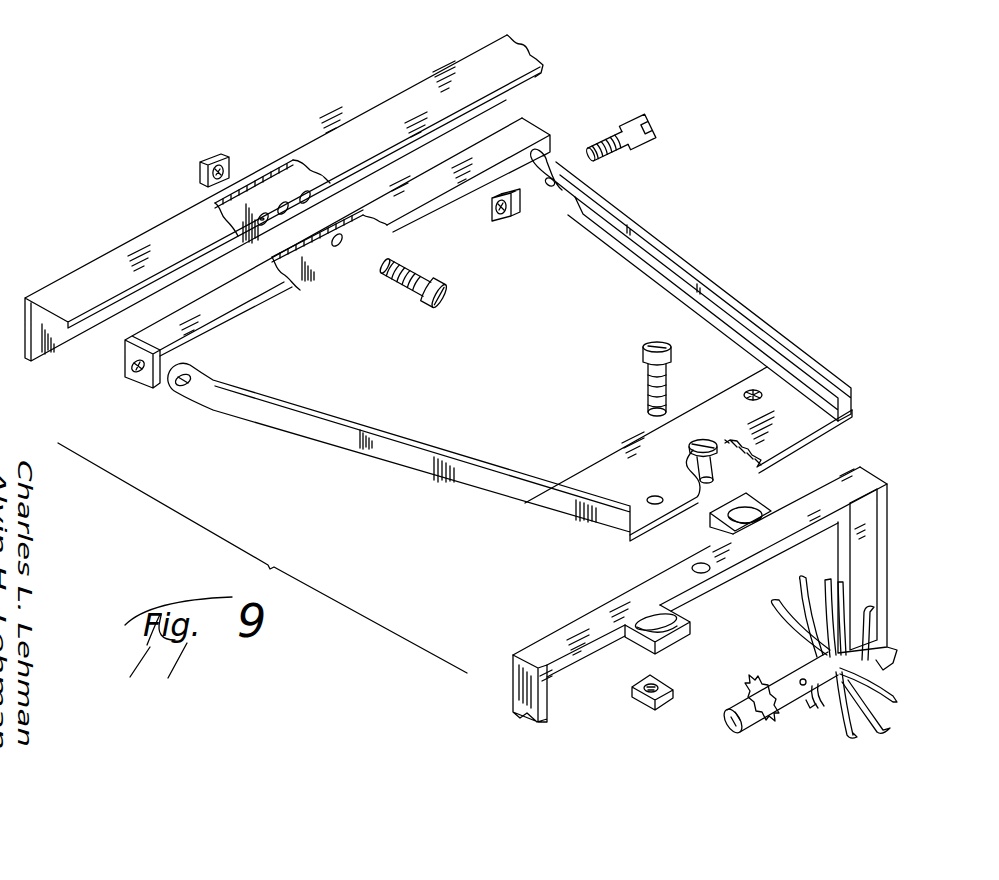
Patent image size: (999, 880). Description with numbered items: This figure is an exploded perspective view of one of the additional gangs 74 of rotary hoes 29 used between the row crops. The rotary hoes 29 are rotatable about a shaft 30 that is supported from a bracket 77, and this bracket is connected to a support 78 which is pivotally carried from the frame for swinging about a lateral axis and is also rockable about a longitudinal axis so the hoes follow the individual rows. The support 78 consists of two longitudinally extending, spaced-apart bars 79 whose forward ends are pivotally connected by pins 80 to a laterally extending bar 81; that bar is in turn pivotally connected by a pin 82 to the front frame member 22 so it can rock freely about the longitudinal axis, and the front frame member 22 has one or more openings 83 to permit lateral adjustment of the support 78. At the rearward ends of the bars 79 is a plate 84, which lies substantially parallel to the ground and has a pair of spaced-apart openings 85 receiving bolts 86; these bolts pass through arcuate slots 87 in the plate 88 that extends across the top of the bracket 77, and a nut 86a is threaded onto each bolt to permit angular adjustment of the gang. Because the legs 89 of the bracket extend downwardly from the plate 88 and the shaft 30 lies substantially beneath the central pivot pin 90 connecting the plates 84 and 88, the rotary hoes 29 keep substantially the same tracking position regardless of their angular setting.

The front frame member 22 is at (77, 271).
The rotary hoes 29 is at (899, 730).
The shaft 30 is at (720, 728).
The gang 74 is at (907, 640).
The bracket 77 is at (888, 533).
The support 78 is at (750, 303).
The bars 79 is at (697, 266).
The pins 80 is at (647, 146).
The laterally extending bar 81 is at (443, 191).
The pin 82 is at (418, 278).
The openings 83 is at (285, 204).
The plate 84 is at (793, 430).
The openings 85 is at (747, 392).
The bolts 86 is at (643, 343).
The nut 86a is at (643, 704).
The arcuate slots 87 is at (716, 527).
The plate 88 is at (587, 629).
The legs 89 is at (885, 590).
The central pivot pin 90 is at (690, 442).